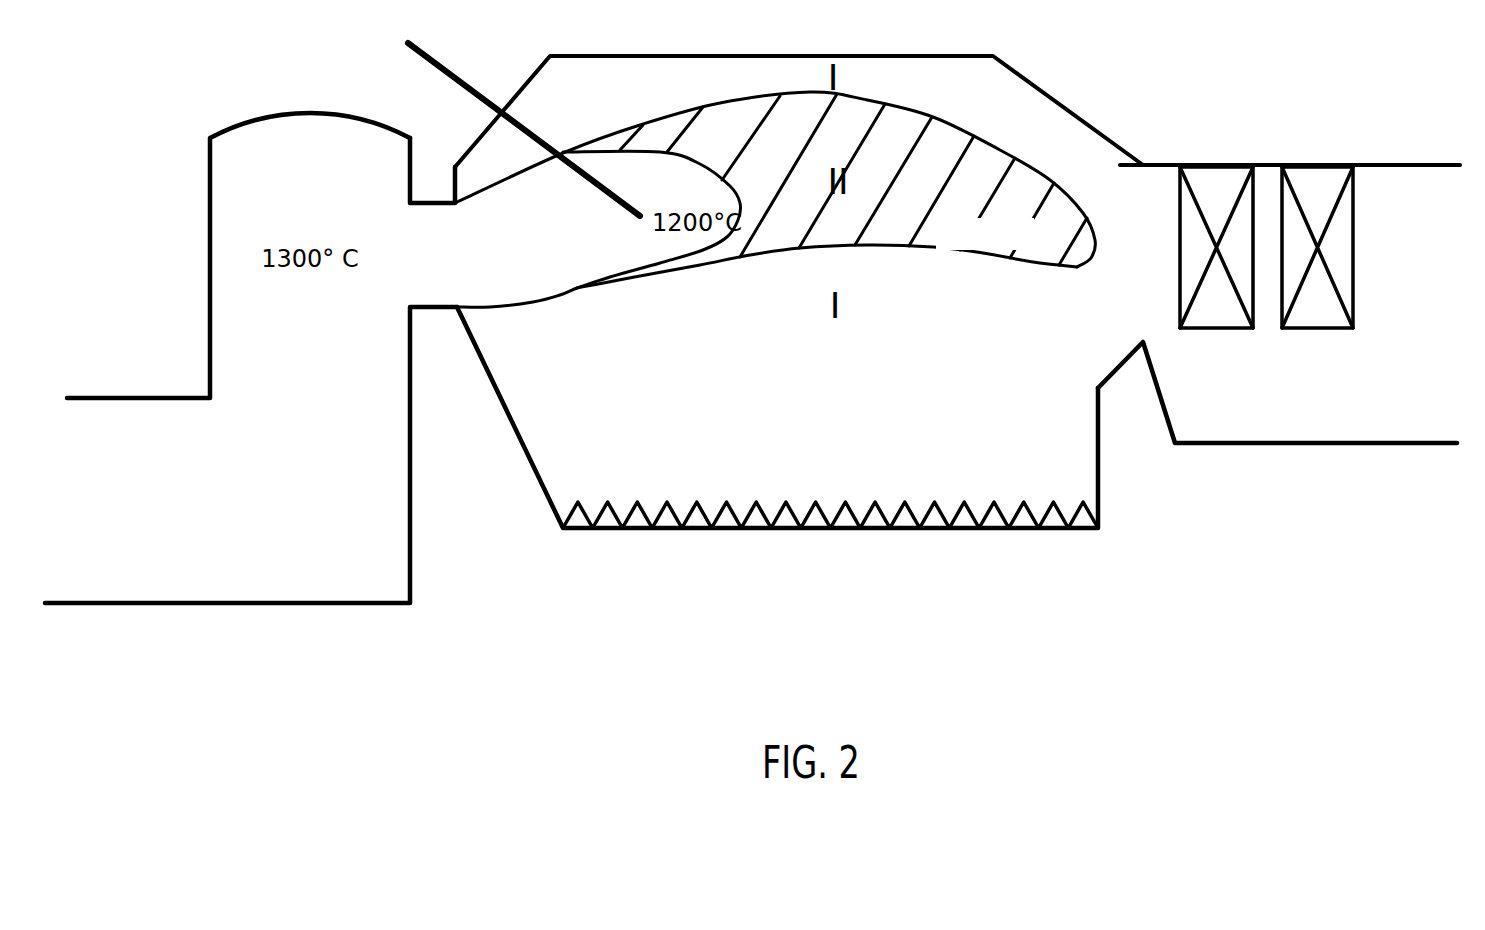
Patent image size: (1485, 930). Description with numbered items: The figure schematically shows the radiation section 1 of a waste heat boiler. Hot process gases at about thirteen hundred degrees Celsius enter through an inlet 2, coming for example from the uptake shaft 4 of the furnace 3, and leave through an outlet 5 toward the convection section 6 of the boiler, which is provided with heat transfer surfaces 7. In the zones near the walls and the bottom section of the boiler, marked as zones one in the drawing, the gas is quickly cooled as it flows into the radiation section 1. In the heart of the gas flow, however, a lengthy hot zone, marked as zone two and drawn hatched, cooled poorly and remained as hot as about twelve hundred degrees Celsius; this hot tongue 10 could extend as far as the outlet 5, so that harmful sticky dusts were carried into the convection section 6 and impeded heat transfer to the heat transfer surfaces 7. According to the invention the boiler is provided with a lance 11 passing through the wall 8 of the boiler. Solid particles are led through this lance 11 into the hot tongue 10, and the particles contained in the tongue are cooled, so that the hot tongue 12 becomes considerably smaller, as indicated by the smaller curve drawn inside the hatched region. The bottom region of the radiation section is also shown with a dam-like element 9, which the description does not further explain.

The radiation section 1 is at (857, 433).
The inlet 2 is at (440, 240).
The furnace 3 is at (130, 528).
The uptake shaft 4 is at (322, 357).
The outlet 5 is at (1140, 198).
The convection section 6 is at (1315, 407).
The heat transfer surfaces 7 is at (1323, 187).
The wall 8 is at (590, 56).
The bubbler / dam 9 is at (1067, 450).
The hot tongue 10 is at (950, 137).
The lance 11 is at (450, 72).
The reduced hot tongue 12 is at (655, 187).